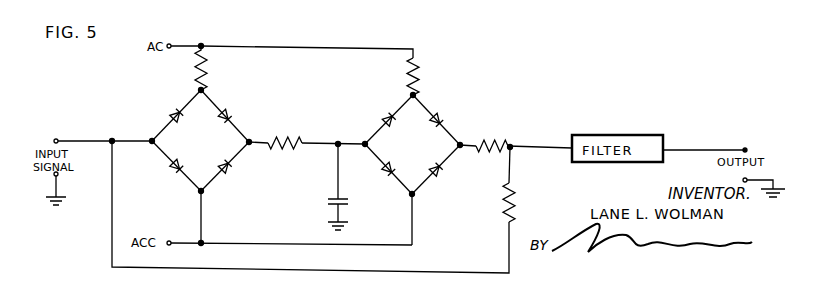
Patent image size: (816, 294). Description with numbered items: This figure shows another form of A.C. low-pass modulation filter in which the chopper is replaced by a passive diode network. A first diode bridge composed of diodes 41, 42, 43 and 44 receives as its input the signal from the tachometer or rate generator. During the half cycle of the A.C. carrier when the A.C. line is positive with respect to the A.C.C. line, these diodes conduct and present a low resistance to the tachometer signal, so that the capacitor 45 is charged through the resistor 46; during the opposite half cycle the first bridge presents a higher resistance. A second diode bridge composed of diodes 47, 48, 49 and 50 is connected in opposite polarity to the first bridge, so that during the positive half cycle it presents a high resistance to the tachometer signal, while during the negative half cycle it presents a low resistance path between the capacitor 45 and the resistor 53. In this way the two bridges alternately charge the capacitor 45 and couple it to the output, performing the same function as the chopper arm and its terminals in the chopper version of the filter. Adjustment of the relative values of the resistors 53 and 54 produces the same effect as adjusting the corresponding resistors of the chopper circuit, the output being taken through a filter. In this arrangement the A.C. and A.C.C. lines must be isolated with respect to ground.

The diode 41 is at (171, 112).
The diode 42 is at (232, 113).
The diode 43 is at (229, 168).
The diode 44 is at (171, 168).
The capacitor 45 is at (328, 202).
The resistor 46 is at (278, 135).
The diode 47 is at (386, 116).
The diode 48 is at (440, 116).
The diode 49 is at (441, 176).
The diode 50 is at (388, 178).
The resistor 53 is at (484, 140).
The resistor 54 is at (516, 196).